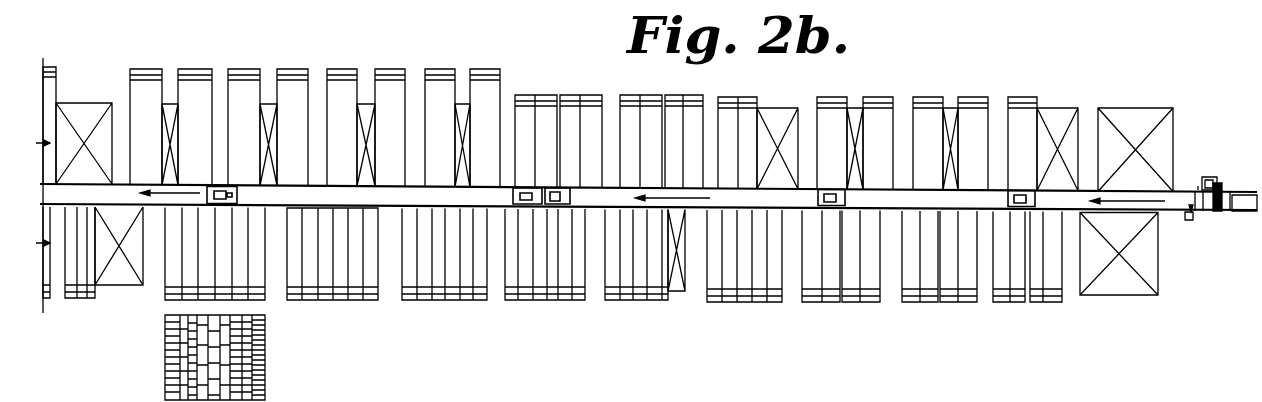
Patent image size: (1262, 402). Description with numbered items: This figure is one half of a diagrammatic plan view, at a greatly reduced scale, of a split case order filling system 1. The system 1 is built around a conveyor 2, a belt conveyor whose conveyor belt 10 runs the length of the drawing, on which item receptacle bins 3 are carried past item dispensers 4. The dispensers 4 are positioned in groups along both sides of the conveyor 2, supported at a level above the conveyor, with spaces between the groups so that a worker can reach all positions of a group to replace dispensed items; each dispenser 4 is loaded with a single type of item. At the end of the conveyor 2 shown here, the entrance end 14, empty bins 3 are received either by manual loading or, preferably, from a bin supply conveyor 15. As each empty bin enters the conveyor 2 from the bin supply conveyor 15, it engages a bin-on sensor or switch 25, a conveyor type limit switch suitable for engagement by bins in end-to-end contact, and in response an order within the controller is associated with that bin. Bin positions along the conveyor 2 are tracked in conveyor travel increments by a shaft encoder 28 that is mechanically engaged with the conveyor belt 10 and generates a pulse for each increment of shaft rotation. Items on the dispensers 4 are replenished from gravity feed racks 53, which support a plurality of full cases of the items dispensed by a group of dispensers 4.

The split case order filling system 1 is at (855, 79).
The conveyor 2 is at (43, 189).
The item receptacle bin 3 is at (1244, 212).
The item dispenser 4 is at (407, 70).
The conveyor belt 10 is at (55, 198).
The entrance end 14 is at (1204, 209).
The bin supply conveyor 15 is at (1225, 198).
The bin-on sensor or switch 25 is at (1191, 220).
The shaft encoder 28 is at (1210, 177).
The gravity feed rack 53 is at (165, 363).